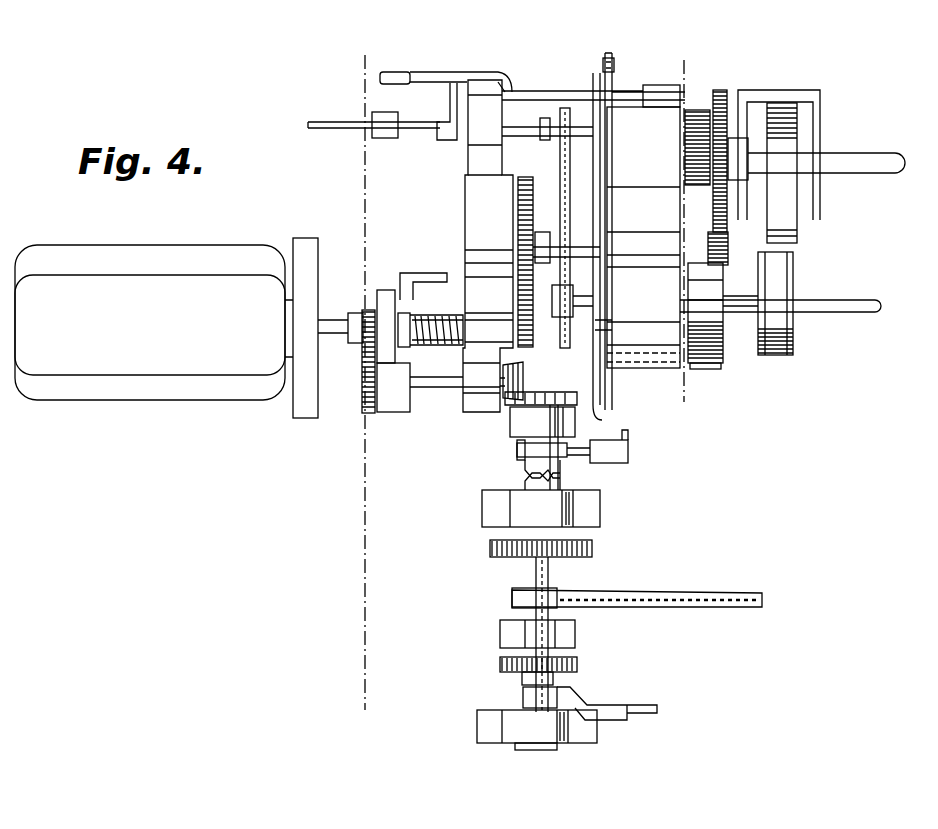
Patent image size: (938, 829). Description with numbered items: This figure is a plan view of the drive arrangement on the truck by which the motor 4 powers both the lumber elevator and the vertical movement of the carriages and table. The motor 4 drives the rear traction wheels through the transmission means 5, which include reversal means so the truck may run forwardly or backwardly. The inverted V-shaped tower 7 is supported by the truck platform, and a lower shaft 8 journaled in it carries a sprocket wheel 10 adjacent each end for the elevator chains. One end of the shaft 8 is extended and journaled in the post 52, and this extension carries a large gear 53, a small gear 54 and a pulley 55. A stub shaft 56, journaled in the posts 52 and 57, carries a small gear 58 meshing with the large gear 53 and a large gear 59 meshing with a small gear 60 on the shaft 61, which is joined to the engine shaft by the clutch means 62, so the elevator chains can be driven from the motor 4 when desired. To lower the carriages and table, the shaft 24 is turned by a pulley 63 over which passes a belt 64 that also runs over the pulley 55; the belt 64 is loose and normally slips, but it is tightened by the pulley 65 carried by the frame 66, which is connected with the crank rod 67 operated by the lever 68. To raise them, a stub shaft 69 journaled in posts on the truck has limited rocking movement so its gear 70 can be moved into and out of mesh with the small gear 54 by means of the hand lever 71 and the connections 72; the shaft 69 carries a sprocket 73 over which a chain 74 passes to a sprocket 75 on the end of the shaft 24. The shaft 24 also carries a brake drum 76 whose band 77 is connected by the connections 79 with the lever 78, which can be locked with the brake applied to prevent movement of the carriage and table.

The motor 4 is at (166, 328).
The transmission means 5 is at (536, 561).
The tower 7 is at (358, 388).
The shaft 8 is at (893, 147).
The sprocket wheel 10 is at (475, 712).
The shaft 24 is at (860, 303).
The post 52 is at (643, 237).
The large gear 53 is at (718, 195).
The small gear 54 is at (687, 161).
The pulley 55 is at (800, 140).
The stub shaft 56 is at (584, 250).
The post 57 is at (468, 236).
The small gear 58 is at (728, 256).
The large gear 59 is at (520, 242).
The small gear 60 is at (534, 342).
The shaft 61 is at (432, 315).
The clutch means 62 is at (386, 290).
The pulley 63 is at (795, 270).
The belt 64 is at (780, 350).
The pulley 65 is at (800, 238).
The frame 66 is at (785, 98).
The crank rod 67 is at (447, 103).
The lever 68 is at (340, 128).
The stub shaft 69 is at (518, 128).
The gear 70 is at (700, 118).
The hand lever 71 is at (420, 72).
The connections 72 is at (514, 84).
The sprocket 73 is at (582, 118).
The chain 74 is at (560, 160).
The sprocket 75 is at (573, 318).
The brake drum 76 is at (723, 338).
The band 77 is at (708, 356).
The lever 78 is at (610, 60).
The connections 79 is at (600, 322).